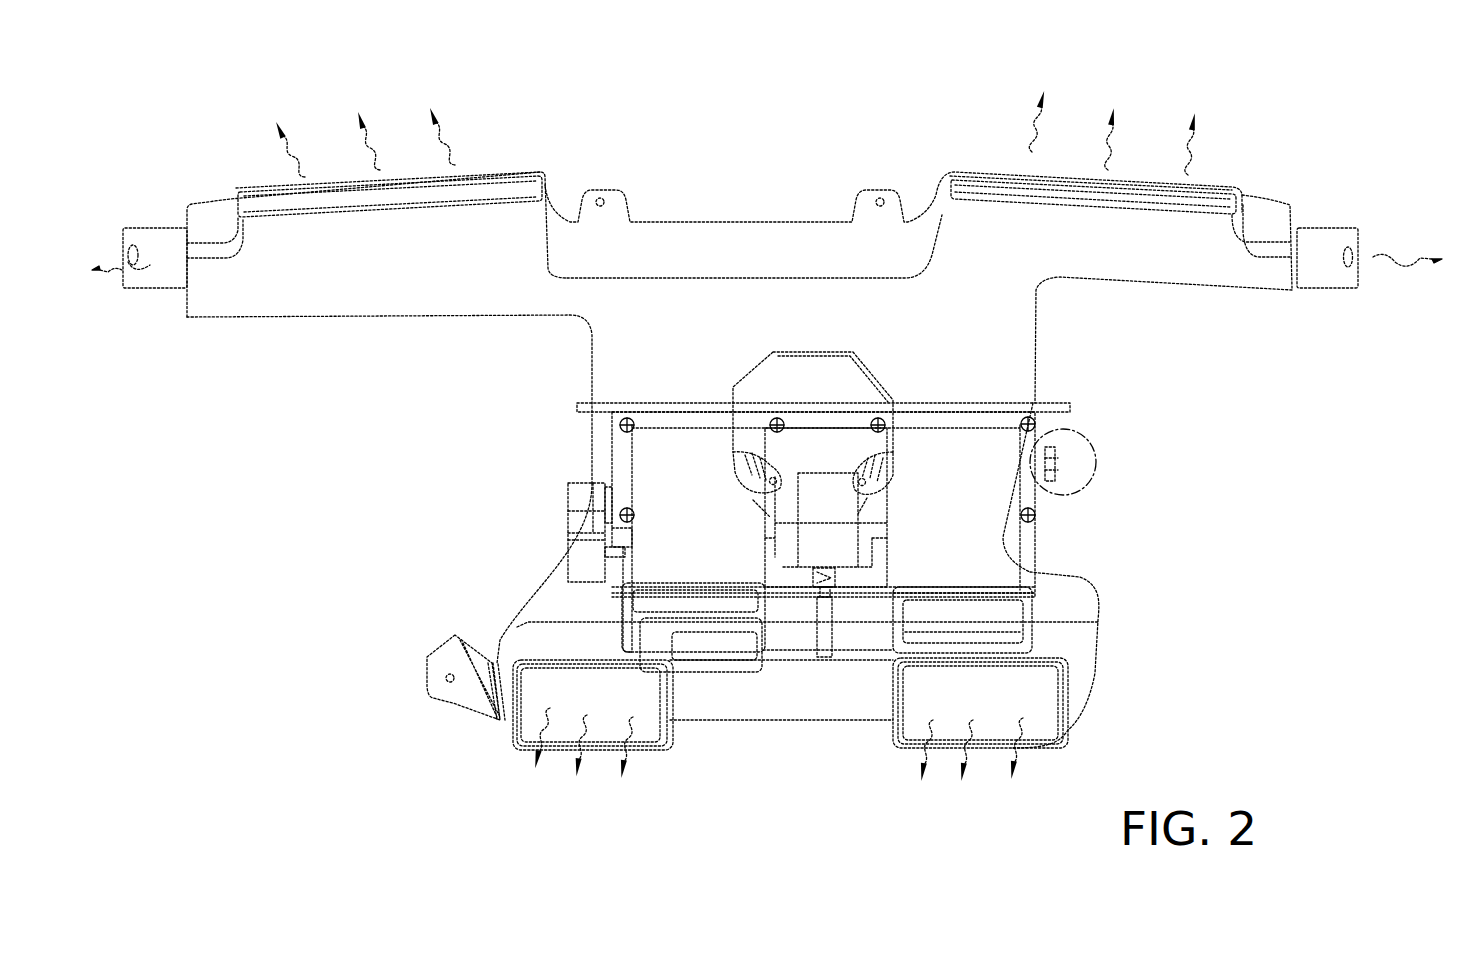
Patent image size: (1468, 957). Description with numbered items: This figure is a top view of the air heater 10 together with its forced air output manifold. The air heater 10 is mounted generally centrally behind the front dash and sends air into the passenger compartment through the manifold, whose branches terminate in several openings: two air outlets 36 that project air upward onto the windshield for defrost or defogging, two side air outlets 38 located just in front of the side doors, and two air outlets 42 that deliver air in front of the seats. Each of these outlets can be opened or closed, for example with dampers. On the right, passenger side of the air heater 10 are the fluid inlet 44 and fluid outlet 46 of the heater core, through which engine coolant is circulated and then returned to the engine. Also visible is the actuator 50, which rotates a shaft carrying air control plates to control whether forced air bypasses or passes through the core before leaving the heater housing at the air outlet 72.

The air heater 10 is at (700, 500).
The air outlets 36 is at (483, 126).
The side air outlets 38 is at (140, 318).
The air outlets 42 is at (645, 777).
The fluid inlet 44 is at (1050, 475).
The fluid outlet 46 is at (1050, 453).
The actuator 50 is at (577, 522).
The air outlet 72 is at (652, 637).